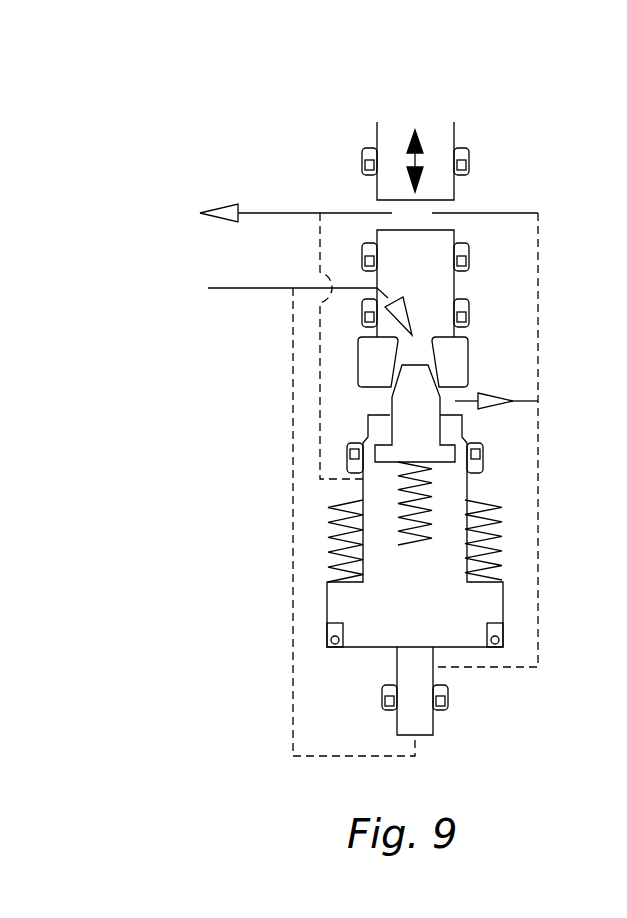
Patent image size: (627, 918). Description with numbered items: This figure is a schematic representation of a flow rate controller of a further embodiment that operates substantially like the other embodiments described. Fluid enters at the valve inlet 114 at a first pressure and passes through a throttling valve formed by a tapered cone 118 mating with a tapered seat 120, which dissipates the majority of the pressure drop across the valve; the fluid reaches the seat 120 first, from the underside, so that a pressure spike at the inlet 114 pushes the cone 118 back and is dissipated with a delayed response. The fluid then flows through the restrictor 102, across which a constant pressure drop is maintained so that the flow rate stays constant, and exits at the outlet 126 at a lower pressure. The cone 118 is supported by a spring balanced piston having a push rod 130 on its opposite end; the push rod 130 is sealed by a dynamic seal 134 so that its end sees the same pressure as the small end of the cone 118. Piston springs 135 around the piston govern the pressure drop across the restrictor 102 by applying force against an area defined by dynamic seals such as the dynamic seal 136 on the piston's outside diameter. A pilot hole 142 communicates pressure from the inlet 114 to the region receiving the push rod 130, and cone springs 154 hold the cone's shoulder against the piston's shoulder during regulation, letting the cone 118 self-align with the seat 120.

The restrictor 102 is at (415, 160).
The valve inlet 114 is at (252, 289).
The cone 118 is at (403, 417).
The seat 120 is at (366, 365).
The outlet 126 is at (266, 211).
The push rod 130 is at (425, 730).
The dynamic seal 134 is at (448, 712).
The piston springs 135 is at (338, 545).
The dynamic seal 136 is at (503, 640).
The pilot hole 142 is at (293, 690).
The cone springs 154 is at (422, 490).